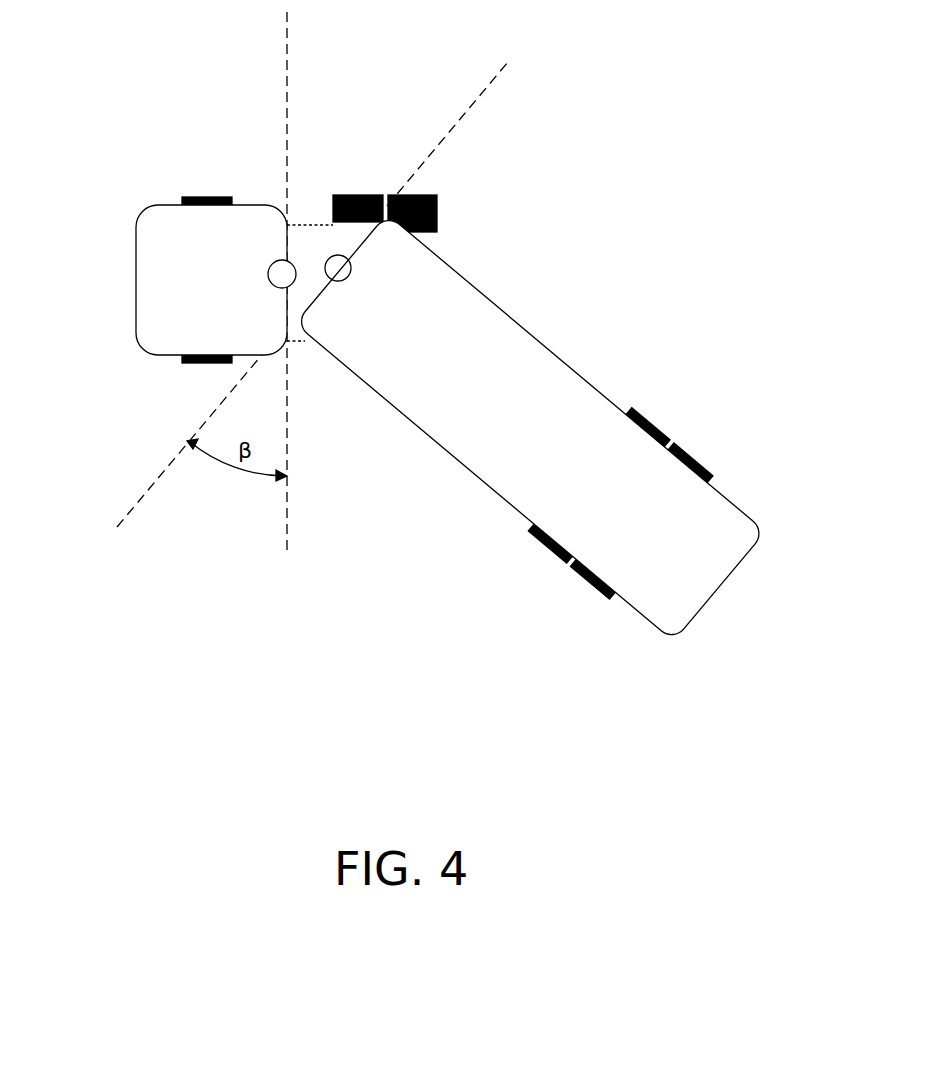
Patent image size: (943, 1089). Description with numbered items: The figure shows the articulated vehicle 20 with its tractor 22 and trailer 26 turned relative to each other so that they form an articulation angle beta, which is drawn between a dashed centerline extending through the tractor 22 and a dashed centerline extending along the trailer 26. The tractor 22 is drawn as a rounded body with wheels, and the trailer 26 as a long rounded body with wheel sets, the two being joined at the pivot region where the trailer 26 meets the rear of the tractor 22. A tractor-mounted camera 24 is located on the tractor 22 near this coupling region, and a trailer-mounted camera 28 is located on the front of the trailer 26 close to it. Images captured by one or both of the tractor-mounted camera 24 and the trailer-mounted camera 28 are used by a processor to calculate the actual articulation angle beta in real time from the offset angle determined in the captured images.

The articulated vehicle 20 is at (419, 330).
The tractor 22 is at (137, 290).
The tractor-mounted camera 24 is at (270, 266).
The trailer 26 is at (700, 587).
The trailer-mounted camera 28 is at (351, 266).